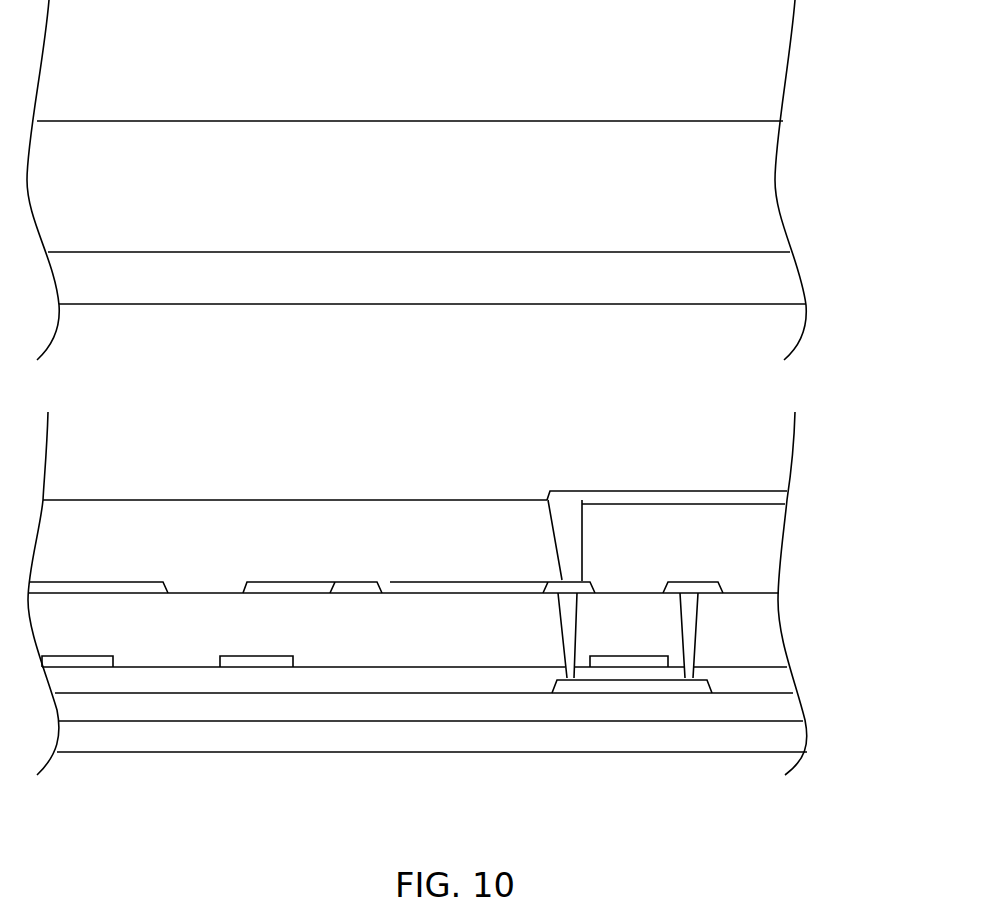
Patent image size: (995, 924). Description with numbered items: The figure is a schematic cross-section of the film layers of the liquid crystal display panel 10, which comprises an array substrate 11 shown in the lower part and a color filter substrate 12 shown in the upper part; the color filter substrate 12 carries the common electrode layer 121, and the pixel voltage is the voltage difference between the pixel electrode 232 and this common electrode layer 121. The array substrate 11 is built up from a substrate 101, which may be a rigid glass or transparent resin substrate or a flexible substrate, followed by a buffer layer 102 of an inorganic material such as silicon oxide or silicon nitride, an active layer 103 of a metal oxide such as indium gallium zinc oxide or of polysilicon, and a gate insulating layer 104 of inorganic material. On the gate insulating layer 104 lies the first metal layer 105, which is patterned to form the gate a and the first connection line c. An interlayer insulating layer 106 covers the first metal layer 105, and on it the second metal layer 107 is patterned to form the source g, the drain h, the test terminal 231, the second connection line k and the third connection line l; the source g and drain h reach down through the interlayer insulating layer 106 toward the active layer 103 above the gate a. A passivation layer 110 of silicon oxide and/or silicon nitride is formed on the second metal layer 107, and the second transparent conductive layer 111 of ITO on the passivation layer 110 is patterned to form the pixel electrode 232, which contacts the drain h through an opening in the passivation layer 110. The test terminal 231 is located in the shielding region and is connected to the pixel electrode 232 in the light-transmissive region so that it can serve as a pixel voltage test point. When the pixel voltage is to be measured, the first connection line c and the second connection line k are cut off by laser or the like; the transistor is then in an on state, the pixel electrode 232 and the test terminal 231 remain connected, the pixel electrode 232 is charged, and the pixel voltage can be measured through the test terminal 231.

The liquid crystal display panel 10 is at (115, 67).
The color filter substrate 12 is at (747, 121).
The common electrode layer 121 is at (777, 300).
The array substrate 11 is at (165, 500).
The second transparent conductive layer 111 is at (767, 497).
The passivation layer 110 is at (745, 553).
The pixel electrode 232 is at (715, 498).
The test terminal 231 is at (367, 585).
The second metal layer 107 is at (713, 590).
The interlayer insulating layer 106 is at (750, 618).
The first metal layer 105 is at (700, 660).
The gate insulating layer 104 is at (788, 687).
The active layer 103 is at (699, 685).
The buffer layer 102 is at (792, 712).
The substrate 101 is at (797, 744).
The second connection line k is at (276, 588).
The third connection line l is at (529, 585).
The drain h is at (570, 585).
The source g is at (692, 588).
The gate a is at (608, 663).
The first connection line c is at (80, 662).